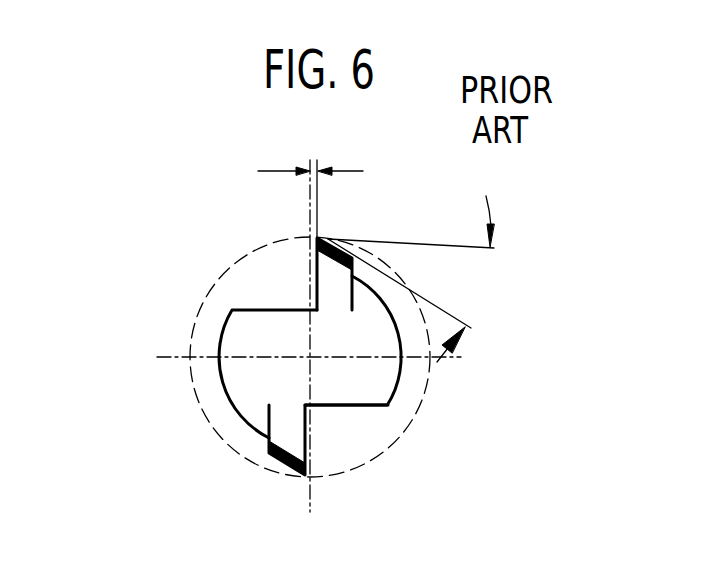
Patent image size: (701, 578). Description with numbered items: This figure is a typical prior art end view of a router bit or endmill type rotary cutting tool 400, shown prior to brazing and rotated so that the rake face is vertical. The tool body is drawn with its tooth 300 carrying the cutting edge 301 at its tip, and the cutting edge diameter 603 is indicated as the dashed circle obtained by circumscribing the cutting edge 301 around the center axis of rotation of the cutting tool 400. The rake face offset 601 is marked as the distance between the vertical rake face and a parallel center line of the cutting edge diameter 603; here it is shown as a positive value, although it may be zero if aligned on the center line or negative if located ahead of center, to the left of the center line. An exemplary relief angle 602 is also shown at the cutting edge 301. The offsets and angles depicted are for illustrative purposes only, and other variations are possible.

The cutting tool 400 is at (139, 192).
The rotor tooth 300 is at (315, 276).
The cutting edge 301 is at (313, 236).
The rake face offset 601 is at (340, 195).
The relief angle 602 is at (417, 279).
The cutting edge diameter 603 is at (212, 422).